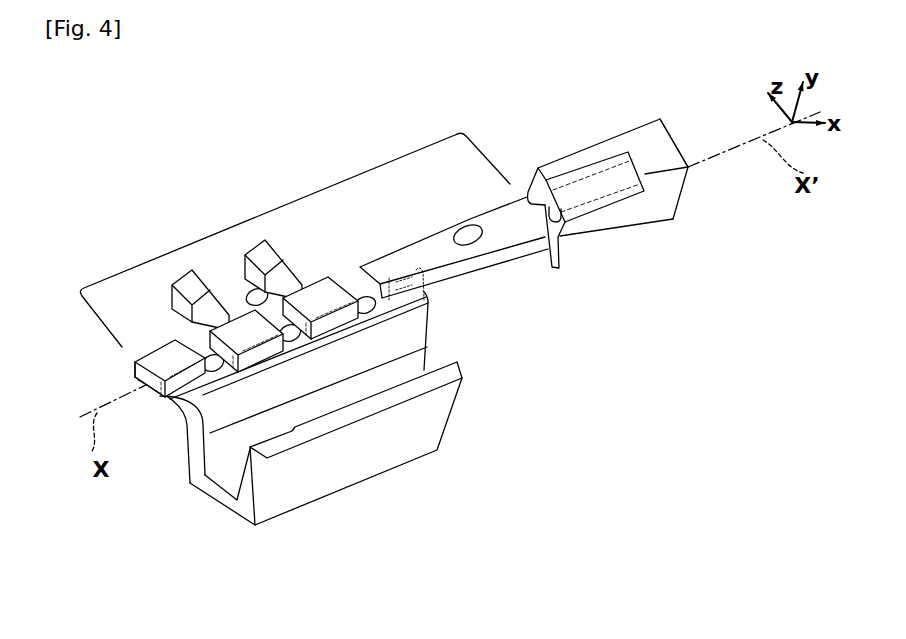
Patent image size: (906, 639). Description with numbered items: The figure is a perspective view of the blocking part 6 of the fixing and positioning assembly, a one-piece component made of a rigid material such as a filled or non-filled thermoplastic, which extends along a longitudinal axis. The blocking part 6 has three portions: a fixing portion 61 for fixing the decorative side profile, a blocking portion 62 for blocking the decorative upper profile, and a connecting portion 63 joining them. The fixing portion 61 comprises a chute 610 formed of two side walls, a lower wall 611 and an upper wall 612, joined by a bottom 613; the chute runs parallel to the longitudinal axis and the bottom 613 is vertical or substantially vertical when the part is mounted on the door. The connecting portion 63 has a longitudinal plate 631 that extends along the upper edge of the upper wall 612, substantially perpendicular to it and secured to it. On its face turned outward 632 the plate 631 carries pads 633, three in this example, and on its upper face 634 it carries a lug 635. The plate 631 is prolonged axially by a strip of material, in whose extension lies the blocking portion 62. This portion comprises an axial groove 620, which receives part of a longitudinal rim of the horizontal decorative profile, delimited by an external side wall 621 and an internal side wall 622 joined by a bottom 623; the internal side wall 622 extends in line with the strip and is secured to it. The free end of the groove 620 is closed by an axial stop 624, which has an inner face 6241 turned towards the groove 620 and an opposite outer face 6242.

The blocking part 6 is at (329, 166).
The fixing portion 61 is at (206, 515).
The chute 610 is at (343, 398).
The lower wall 611 is at (360, 457).
The upper wall 612 is at (229, 443).
The bottom 613 is at (231, 473).
The blocking portion 62 is at (609, 121).
The groove 620 is at (611, 221).
The external side wall 621 is at (593, 182).
The internal side wall 622 is at (592, 245).
The bottom 623 is at (524, 198).
The axial stop 624 is at (657, 149).
The inner face 6241 is at (639, 203).
The outer face 6242 is at (685, 148).
The connecting portion 63 is at (280, 209).
The longitudinal plate 631 is at (150, 379).
The face turned outward 632 is at (353, 284).
The pad 633 is at (172, 353).
The upper face 634 is at (126, 364).
The lug 635 is at (277, 280).